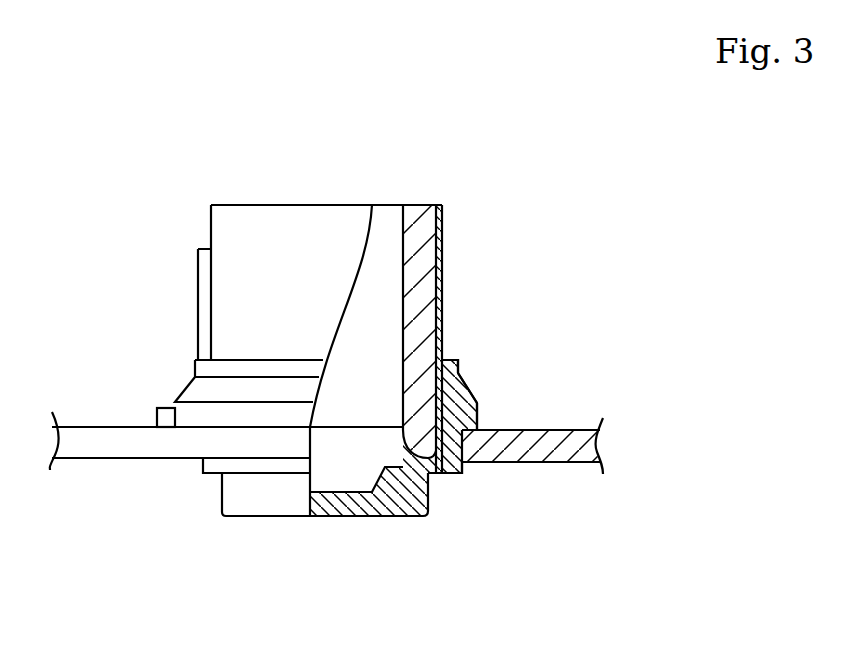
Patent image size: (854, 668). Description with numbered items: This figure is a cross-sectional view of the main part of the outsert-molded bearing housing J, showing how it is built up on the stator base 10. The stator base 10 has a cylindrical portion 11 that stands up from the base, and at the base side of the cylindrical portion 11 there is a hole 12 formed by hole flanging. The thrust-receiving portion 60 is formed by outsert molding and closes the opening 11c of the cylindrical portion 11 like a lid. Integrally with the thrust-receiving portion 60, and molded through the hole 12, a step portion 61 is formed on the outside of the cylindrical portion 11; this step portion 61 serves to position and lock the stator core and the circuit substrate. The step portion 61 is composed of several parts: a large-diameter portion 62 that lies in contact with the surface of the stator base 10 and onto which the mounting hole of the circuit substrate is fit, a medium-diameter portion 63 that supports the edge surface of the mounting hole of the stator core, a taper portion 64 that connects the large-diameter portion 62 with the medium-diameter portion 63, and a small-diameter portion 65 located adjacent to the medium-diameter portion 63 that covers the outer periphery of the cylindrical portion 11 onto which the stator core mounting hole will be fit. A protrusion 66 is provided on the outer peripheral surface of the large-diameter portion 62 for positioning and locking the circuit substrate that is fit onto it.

The stator base 10 is at (97, 441).
The cylindrical portion 11 is at (417, 207).
The opening 11c is at (369, 453).
The hole 12 is at (443, 475).
The thrust-receiving portion 60 is at (350, 513).
The step portion 61 is at (642, 395).
The large-diameter portion 62 is at (568, 392).
The medium-diameter portion 63 is at (568, 297).
The taper portion 64 is at (568, 345).
The small-diameter portion 65 is at (568, 254).
The protrusion 66 is at (198, 350).
The bearing housing J is at (455, 223).